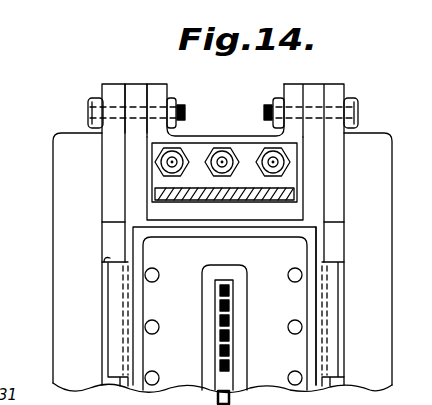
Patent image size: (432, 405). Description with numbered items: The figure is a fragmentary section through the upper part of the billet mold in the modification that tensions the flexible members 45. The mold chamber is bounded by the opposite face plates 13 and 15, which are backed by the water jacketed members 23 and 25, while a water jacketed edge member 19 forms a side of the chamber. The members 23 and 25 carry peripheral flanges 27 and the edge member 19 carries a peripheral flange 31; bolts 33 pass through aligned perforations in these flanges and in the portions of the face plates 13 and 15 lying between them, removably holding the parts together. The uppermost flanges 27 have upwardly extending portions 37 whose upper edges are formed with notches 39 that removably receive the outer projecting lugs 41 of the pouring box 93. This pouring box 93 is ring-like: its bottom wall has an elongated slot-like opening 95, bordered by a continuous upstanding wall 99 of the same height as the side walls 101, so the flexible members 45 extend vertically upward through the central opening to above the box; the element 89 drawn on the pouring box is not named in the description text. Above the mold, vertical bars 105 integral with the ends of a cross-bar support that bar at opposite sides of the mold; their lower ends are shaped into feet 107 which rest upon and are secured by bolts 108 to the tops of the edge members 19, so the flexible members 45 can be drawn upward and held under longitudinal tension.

The face plate 13 is at (137, 84).
The face plate 15 is at (314, 85).
The water jacketed member 19 is at (206, 137).
The water jacketed member 23 is at (53, 252).
The water jacketed member 25 is at (392, 306).
The peripheral flange 27 is at (113, 84).
The peripheral flange 31 is at (158, 90).
The bolt 33 is at (89, 107).
The upwardly extending portion 37 is at (102, 240).
The notch 39 is at (108, 258).
The projecting lug 41 is at (113, 320).
The flexible member 45 is at (228, 333).
The mounting plate 89 is at (148, 268).
The pouring box 93 is at (199, 372).
The slot-like opening 95 is at (214, 302).
The upstanding wall 99 is at (223, 272).
The side wall 101 is at (289, 256).
The vertical bar 105 is at (214, 194).
The foot 107 is at (297, 173).
The bolt 108 is at (297, 156).